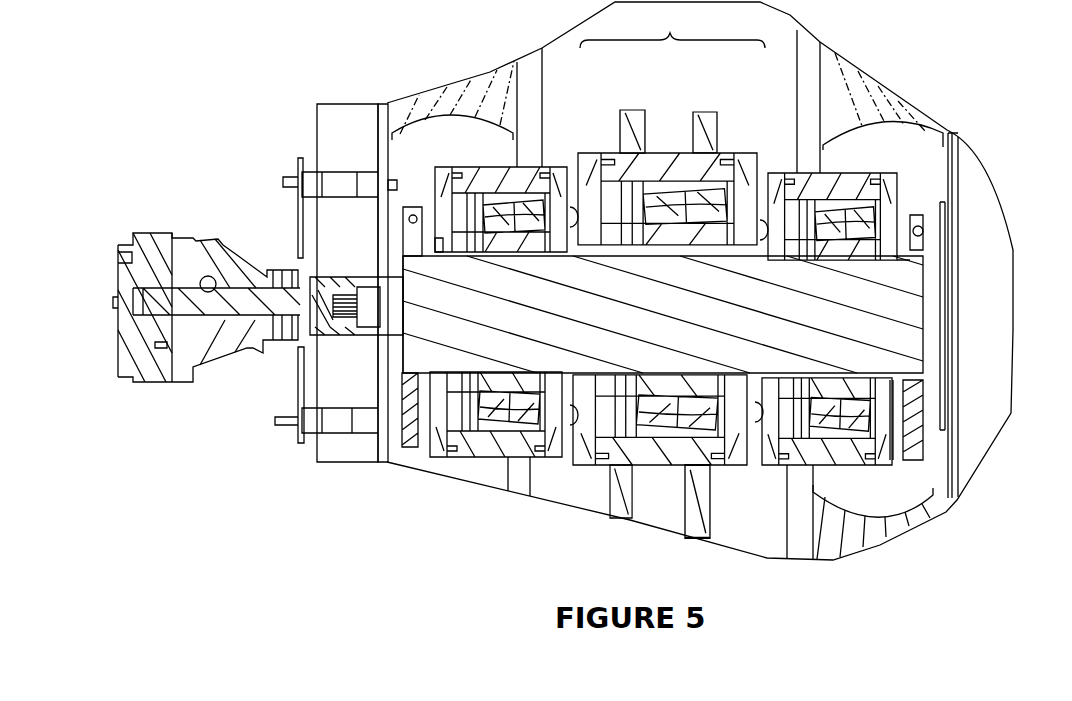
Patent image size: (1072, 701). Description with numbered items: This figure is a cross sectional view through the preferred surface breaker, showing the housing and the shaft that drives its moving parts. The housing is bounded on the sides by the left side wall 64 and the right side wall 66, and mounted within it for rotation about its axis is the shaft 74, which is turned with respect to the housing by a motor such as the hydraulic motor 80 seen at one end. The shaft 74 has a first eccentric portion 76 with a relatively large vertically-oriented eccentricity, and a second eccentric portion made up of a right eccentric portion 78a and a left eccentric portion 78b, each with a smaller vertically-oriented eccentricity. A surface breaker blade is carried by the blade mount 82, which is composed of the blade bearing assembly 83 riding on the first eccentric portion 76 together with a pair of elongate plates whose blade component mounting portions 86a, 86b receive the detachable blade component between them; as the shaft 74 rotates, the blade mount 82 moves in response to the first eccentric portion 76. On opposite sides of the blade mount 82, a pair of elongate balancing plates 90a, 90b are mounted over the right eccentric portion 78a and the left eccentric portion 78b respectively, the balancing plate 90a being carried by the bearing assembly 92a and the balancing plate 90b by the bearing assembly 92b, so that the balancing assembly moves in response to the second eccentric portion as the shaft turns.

The left side wall 64 is at (960, 232).
The right side wall 66 is at (372, 150).
The shaft 74 is at (908, 310).
The first eccentric portion 76 is at (706, 246).
The right eccentric portion 78a is at (433, 250).
The left eccentric portion 78b is at (905, 252).
The hydraulic motor 80 is at (114, 343).
The blade mount 82 is at (668, 276).
The blade bearing assembly 83 is at (657, 142).
The blade component mounting portion 86a is at (628, 106).
The blade component mounting portion 86b is at (716, 108).
The elongate balancing plate 90a is at (530, 68).
The elongate balancing plate 90b is at (812, 52).
The bearing assembly 92a is at (488, 162).
The bearing assembly 92b is at (846, 172).